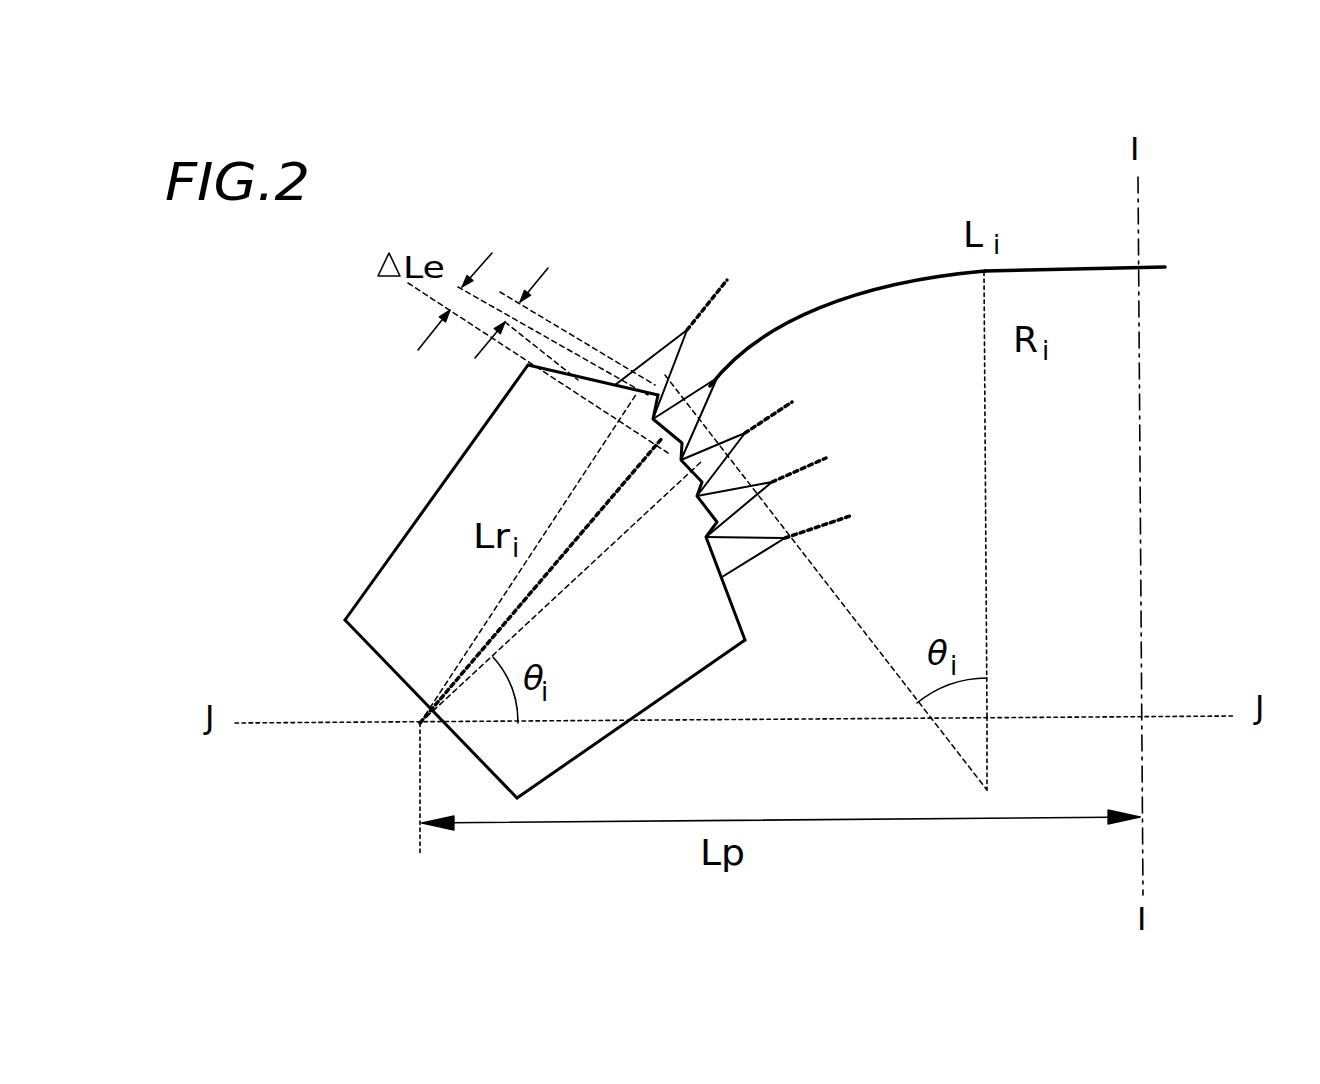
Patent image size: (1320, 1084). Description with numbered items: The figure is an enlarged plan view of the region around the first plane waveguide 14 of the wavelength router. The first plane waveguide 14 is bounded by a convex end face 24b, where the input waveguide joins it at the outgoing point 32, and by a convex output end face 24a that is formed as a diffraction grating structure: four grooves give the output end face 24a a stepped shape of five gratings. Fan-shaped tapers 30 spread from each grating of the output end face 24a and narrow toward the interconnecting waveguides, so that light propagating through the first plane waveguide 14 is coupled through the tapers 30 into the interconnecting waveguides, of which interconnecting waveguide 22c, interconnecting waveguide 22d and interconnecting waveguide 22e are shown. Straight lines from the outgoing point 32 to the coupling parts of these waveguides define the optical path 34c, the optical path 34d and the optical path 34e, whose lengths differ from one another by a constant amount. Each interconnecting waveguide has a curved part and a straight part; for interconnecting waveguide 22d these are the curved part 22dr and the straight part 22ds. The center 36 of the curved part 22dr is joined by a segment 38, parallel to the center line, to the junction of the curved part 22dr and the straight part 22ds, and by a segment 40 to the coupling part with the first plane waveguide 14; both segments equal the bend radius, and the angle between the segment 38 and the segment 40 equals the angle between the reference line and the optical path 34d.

The first plane waveguide 14 is at (508, 581).
The interconnecting waveguide 22c is at (790, 405).
The interconnecting waveguide 22d is at (937, 235).
The curved part 22dr is at (870, 288).
The straight part 22ds is at (1075, 207).
The interconnecting waveguide 22e is at (702, 313).
The output end face 24a is at (737, 608).
The end face 24b is at (373, 663).
The tapers 30 is at (763, 550).
The outgoing point 32 is at (420, 723).
The optical path 34c is at (633, 530).
The optical path 34d is at (493, 640).
The optical path 34e is at (505, 593).
The center 36 is at (992, 792).
The segment 38 is at (990, 445).
The segment 40 is at (822, 580).